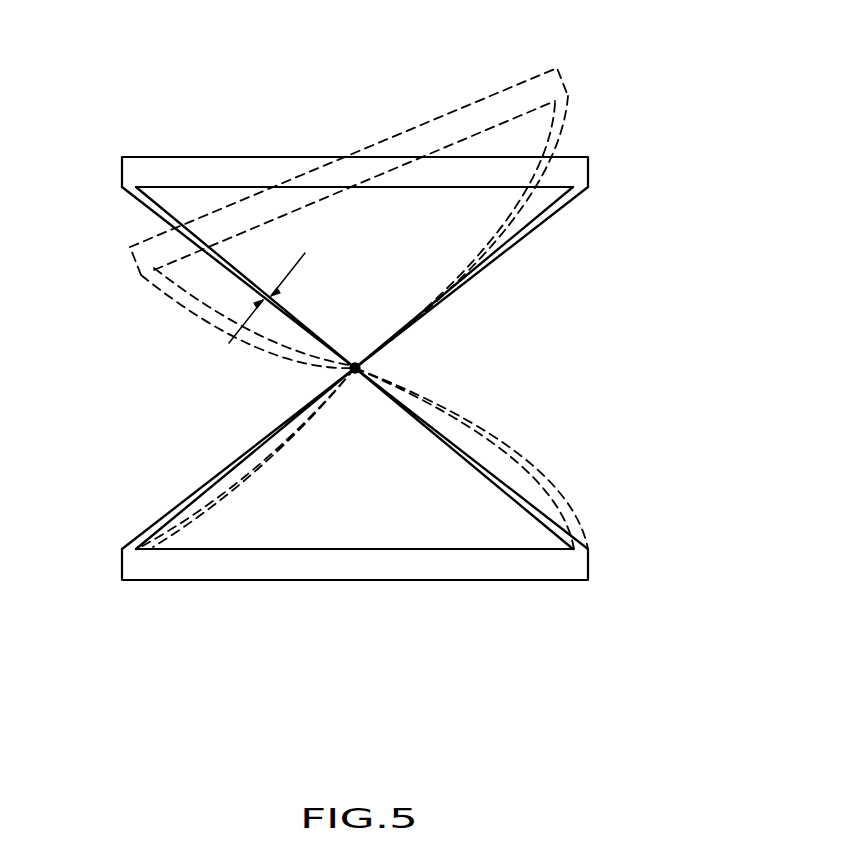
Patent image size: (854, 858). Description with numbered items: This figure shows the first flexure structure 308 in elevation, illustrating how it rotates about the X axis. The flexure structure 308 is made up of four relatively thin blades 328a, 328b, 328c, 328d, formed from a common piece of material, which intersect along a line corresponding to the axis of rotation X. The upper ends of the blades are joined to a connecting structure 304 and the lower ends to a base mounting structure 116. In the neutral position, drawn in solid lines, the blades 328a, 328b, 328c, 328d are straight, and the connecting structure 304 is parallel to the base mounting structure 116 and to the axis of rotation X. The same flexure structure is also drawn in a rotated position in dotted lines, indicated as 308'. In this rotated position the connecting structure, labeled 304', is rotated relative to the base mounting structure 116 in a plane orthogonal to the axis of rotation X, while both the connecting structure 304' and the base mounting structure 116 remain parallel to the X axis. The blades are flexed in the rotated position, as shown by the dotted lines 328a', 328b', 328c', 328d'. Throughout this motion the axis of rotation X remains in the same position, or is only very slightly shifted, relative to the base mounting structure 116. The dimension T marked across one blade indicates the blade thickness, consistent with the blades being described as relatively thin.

The connecting structure 304 is at (355, 137).
The connecting structure in rotated position 304' is at (349, 144).
The base mounting structure 116 is at (490, 573).
The first flexure structure 308 is at (358, 368).
The first flexure structure in rotated position 308' is at (405, 307).
The blade 328a is at (191, 277).
The blade 328b is at (522, 277).
The blade 328c is at (491, 458).
The blade 328d is at (238, 458).
The flexed blade 328a' is at (223, 318).
The flexed blade 328b' is at (536, 232).
The flexed blade 328c' is at (482, 457).
The flexed blade 328d' is at (246, 458).
The axis of rotation X is at (362, 368).
The arm thickness T is at (299, 261).